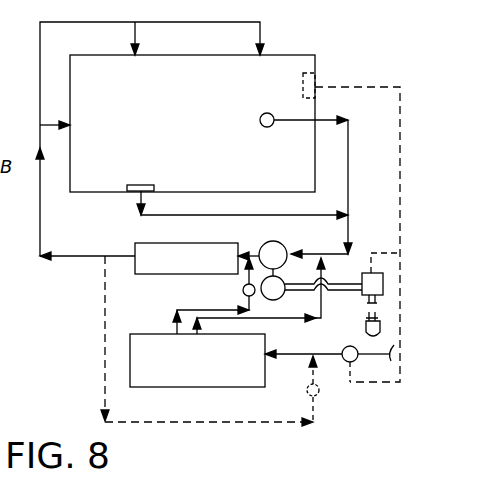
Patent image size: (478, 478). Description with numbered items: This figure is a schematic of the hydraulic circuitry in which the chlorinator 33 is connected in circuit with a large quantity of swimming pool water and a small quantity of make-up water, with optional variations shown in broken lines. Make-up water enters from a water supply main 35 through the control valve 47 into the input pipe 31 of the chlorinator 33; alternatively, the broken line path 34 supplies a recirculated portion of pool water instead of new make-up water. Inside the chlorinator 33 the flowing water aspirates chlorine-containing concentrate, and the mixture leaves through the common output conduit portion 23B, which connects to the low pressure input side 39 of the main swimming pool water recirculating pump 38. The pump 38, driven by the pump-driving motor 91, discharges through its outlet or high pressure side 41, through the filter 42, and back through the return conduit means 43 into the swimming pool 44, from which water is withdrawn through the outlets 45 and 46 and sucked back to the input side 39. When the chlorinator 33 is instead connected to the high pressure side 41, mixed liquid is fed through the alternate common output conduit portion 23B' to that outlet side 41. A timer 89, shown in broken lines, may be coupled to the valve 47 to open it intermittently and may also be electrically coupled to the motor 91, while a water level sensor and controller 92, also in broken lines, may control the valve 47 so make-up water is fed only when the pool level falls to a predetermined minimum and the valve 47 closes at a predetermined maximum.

The common output conduit portion 23B is at (259, 300).
The common output conduit portion 23B' is at (214, 296).
The input pipe 31 is at (289, 359).
The chlorinator 33 is at (179, 390).
The alternate optional broken line path 34 is at (100, 328).
The water supply main 35 is at (375, 354).
The main swimming pool water recirculating pump 38 is at (287, 247).
The low pressure input side 39 is at (304, 254).
The outlet or high pressure side 41 is at (260, 250).
The filter 42 is at (157, 244).
The return conduit means 43 is at (120, 22).
The swimming pool 44 is at (192, 123).
The outlet 45 is at (262, 124).
The outlet 46 is at (141, 185).
The control valve 47 is at (306, 396).
The timer 89 is at (371, 273).
The pump-driving motor 91 is at (288, 298).
The water level sensor and controller 92 is at (318, 78).